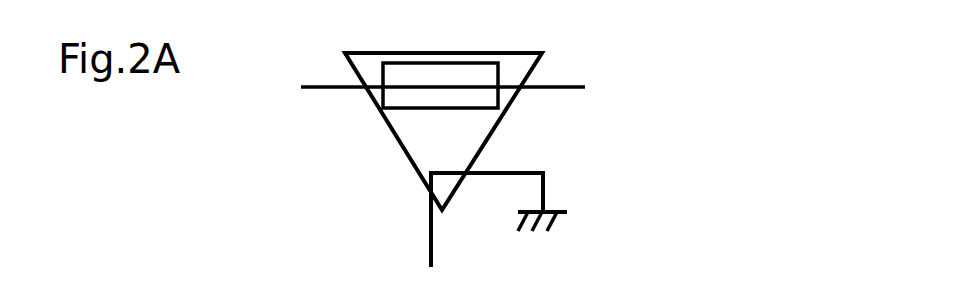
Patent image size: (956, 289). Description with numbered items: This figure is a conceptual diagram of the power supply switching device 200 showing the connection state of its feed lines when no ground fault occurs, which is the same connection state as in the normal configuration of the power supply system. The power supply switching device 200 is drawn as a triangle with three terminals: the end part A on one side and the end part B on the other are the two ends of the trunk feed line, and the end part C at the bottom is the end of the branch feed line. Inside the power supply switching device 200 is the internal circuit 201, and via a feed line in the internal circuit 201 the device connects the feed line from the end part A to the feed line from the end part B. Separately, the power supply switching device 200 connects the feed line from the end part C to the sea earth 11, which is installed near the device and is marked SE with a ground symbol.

The power supply switching device 200 is at (474, 53).
The internal circuit 201 is at (410, 110).
The sea earth (SE) 11 is at (560, 210).